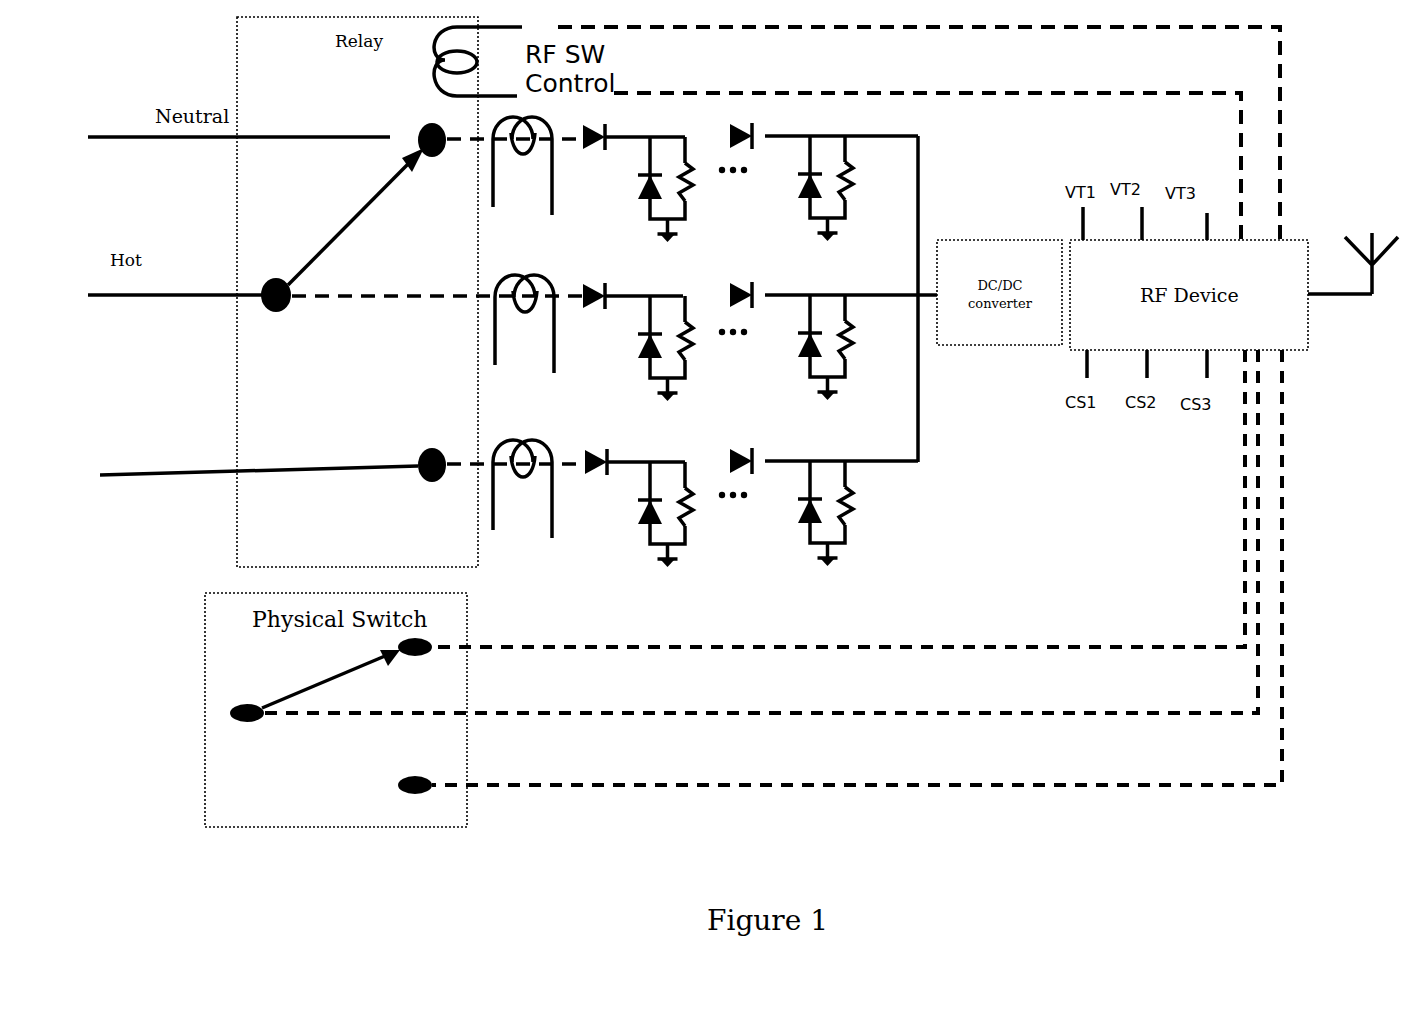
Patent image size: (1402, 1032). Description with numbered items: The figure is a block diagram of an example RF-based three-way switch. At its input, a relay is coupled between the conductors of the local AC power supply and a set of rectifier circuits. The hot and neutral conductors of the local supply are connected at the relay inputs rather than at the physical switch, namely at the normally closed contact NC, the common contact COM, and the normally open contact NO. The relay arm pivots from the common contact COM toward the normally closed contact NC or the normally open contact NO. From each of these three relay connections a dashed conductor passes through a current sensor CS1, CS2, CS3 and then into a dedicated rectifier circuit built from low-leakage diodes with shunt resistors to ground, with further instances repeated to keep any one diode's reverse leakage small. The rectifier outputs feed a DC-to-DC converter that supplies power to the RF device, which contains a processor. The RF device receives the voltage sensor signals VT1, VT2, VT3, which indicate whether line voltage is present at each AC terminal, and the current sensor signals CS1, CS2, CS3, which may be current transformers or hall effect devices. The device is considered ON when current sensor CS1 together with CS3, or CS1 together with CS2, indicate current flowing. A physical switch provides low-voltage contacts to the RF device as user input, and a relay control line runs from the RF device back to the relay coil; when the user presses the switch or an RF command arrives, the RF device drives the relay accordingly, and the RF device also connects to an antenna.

The current sensor CS1 is at (522, 166).
The current sensor CS2 is at (524, 324).
The current sensor CS3 is at (522, 489).
The voltage sensor signal VT1 is at (649, 179).
The voltage sensor signal VT2 is at (649, 337).
The voltage sensor signal VT3 is at (650, 497).
The common contact COM is at (336, 230).
The normally closed contact NC is at (432, 163).
The normally open contact NO is at (408, 455).